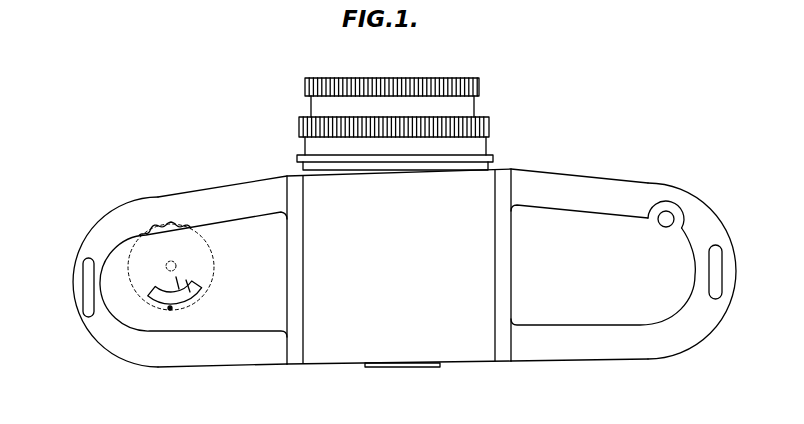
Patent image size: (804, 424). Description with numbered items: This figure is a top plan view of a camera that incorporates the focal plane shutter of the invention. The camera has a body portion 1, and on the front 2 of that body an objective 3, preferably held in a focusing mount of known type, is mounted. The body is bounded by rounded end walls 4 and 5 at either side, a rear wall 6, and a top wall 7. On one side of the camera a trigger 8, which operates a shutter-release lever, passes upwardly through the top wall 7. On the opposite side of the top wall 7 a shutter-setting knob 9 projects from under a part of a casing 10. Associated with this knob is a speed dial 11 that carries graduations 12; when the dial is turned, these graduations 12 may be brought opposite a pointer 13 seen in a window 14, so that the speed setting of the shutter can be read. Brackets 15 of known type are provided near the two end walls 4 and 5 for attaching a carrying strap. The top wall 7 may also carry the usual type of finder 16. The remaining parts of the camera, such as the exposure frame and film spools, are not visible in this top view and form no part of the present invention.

The body portion 1 is at (560, 181).
The front 2 is at (288, 175).
The objective 3 is at (467, 102).
The rounded end wall 4 is at (100, 348).
The rounded end wall 5 is at (713, 320).
The rear wall 6 is at (234, 367).
The top wall 7 is at (487, 352).
The trigger 8 is at (672, 214).
The shutter-setting knob 9 is at (163, 222).
The casing 10 is at (255, 219).
The speed dial 11 is at (190, 299).
The graduations 12 is at (170, 309).
The pointer 13 is at (188, 279).
The window 14 is at (154, 261).
The brackets 15 is at (87, 276).
The finder 16 is at (425, 367).